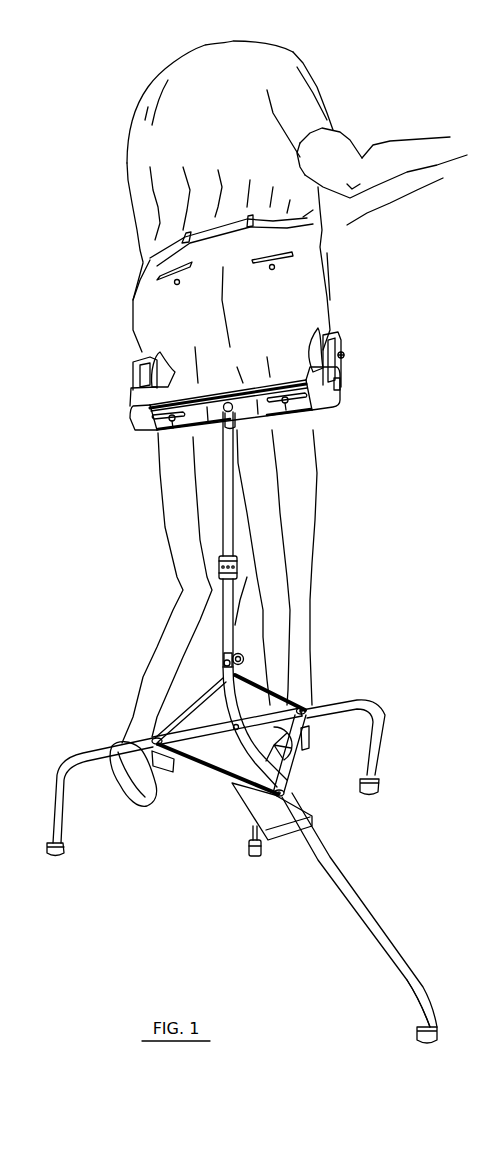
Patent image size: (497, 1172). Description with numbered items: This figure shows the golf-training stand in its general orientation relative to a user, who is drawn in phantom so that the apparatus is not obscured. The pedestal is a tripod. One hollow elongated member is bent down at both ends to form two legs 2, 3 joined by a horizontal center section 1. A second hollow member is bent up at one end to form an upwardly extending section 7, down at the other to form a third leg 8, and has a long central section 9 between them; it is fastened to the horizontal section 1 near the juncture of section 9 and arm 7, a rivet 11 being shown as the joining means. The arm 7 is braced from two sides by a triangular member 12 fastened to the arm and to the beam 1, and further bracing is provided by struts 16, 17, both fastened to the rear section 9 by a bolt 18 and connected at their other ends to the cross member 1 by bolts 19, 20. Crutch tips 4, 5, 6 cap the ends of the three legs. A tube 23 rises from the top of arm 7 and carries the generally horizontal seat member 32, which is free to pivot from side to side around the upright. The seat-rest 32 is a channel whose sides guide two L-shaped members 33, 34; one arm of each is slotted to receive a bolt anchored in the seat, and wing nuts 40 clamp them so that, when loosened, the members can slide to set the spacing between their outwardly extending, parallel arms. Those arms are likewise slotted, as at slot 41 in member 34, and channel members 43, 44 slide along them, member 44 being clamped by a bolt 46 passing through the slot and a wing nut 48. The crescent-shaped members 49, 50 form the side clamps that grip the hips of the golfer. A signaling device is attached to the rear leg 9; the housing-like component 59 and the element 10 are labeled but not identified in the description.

The horizontal center section 1 is at (327, 706).
The leg 2 is at (382, 750).
The leg 3 is at (59, 804).
The crutch tip 4 is at (376, 788).
The crutch tip 5 is at (61, 852).
The crutch tip 6 is at (425, 1043).
The upwardly extending section 7 is at (222, 703).
The third leg 8 is at (430, 1008).
The central section 9 is at (365, 910).
The bracket 10 is at (270, 695).
The rivet 11 is at (235, 731).
The triangular member 12 is at (187, 703).
The strut 16 is at (223, 770).
The strut 17 is at (298, 743).
The bolt 18 is at (288, 793).
The bolt 19 is at (308, 713).
The bolt 20 is at (163, 752).
The tube 23 is at (226, 645).
The seat member 32 is at (298, 418).
The L-shaped member 33 is at (140, 425).
The L-shaped member 34 is at (320, 403).
The wing nut 40 is at (173, 422).
The slot 41 is at (338, 387).
The channel member 43 is at (137, 371).
The channel member 44 is at (339, 371).
The bolt 46 is at (342, 352).
The wing nut 48 is at (346, 355).
The crescent-shaped member 49 is at (164, 364).
The crescent-shaped member 50 is at (309, 345).
The motor housing 59 is at (250, 807).